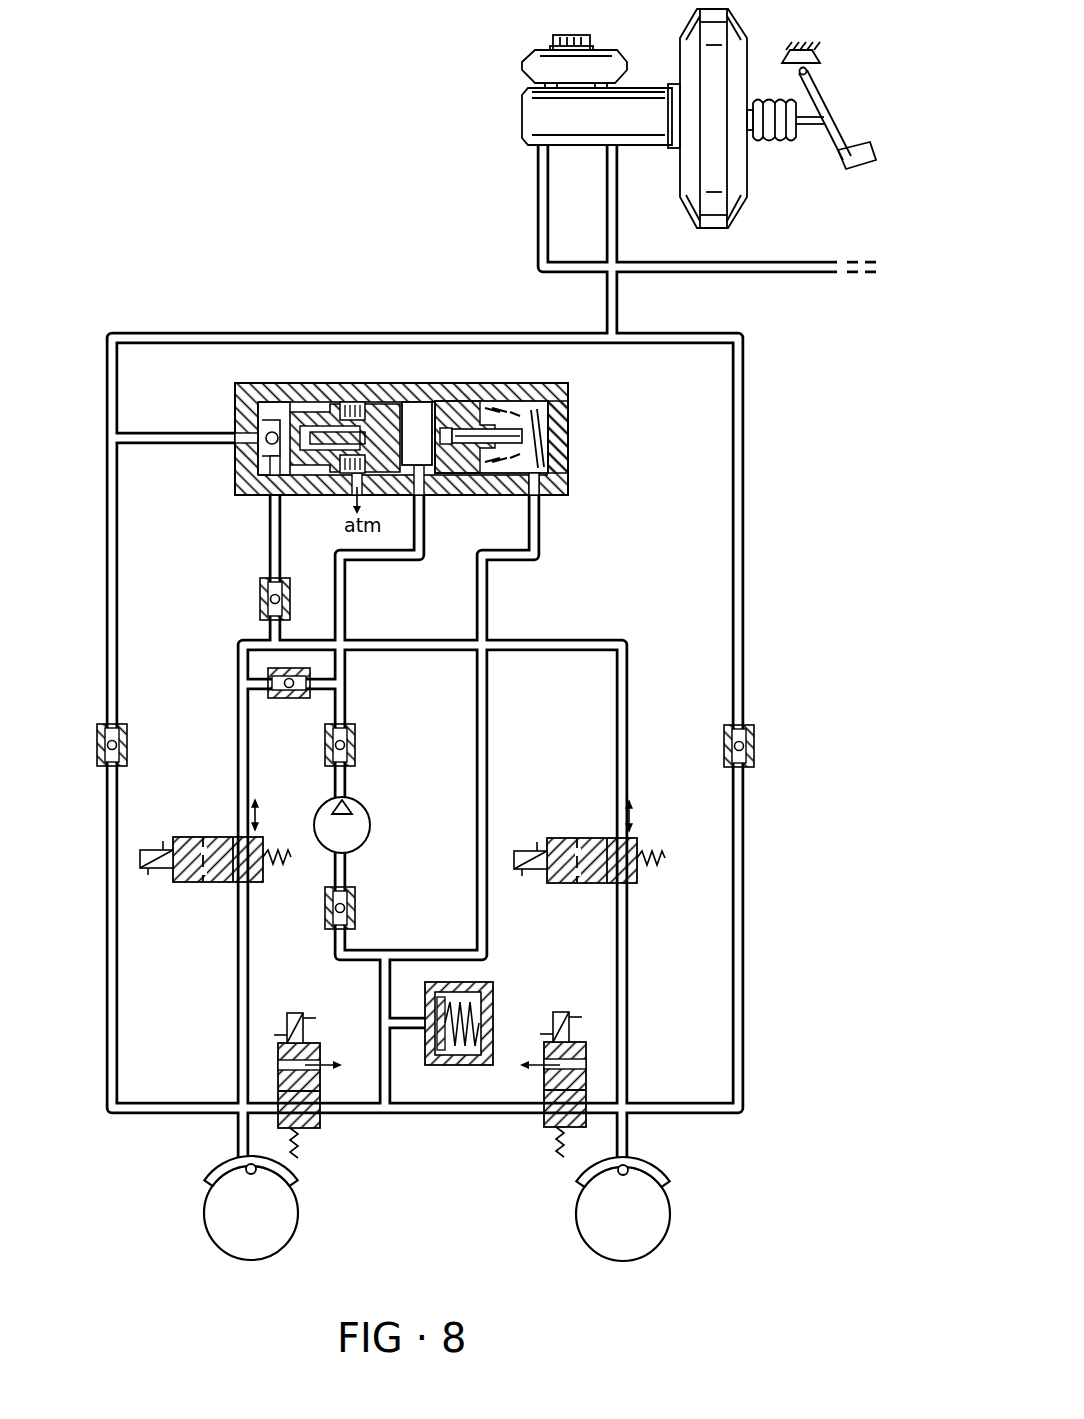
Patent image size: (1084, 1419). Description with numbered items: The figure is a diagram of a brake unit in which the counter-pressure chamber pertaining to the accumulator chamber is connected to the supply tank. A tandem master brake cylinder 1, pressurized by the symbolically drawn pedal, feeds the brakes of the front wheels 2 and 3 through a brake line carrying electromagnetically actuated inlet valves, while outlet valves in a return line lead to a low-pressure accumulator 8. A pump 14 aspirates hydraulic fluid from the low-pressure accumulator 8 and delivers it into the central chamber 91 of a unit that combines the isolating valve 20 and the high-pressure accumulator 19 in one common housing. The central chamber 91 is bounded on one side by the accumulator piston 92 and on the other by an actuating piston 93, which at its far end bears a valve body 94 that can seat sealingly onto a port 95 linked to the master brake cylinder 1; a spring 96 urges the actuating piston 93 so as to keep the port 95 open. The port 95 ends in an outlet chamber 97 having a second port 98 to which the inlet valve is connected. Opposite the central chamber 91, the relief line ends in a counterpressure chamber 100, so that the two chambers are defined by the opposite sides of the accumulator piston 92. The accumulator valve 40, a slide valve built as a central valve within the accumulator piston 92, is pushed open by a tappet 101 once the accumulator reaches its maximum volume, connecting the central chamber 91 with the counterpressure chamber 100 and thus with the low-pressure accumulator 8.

The tandem master brake cylinder 1 is at (522, 118).
The isolating valve 20 is at (210, 398).
The valve body 94 is at (240, 390).
The port 95 is at (252, 455).
The spring 96 is at (345, 402).
The outlet chamber 97 is at (266, 460).
The second port 98 is at (272, 478).
The actuating piston 93 is at (378, 402).
The central chamber 91 is at (417, 404).
The accumulator valve 40 is at (452, 428).
The accumulator piston 92 is at (500, 408).
The high-pressure accumulator 19 is at (536, 408).
The counterpressure chamber 100 is at (568, 395).
The tappet 101 is at (490, 490).
The pump 14 is at (360, 815).
The low-pressure accumulator 8 is at (495, 996).
The front wheel brake 2 is at (288, 1225).
The front wheel brake 3 is at (578, 1224).